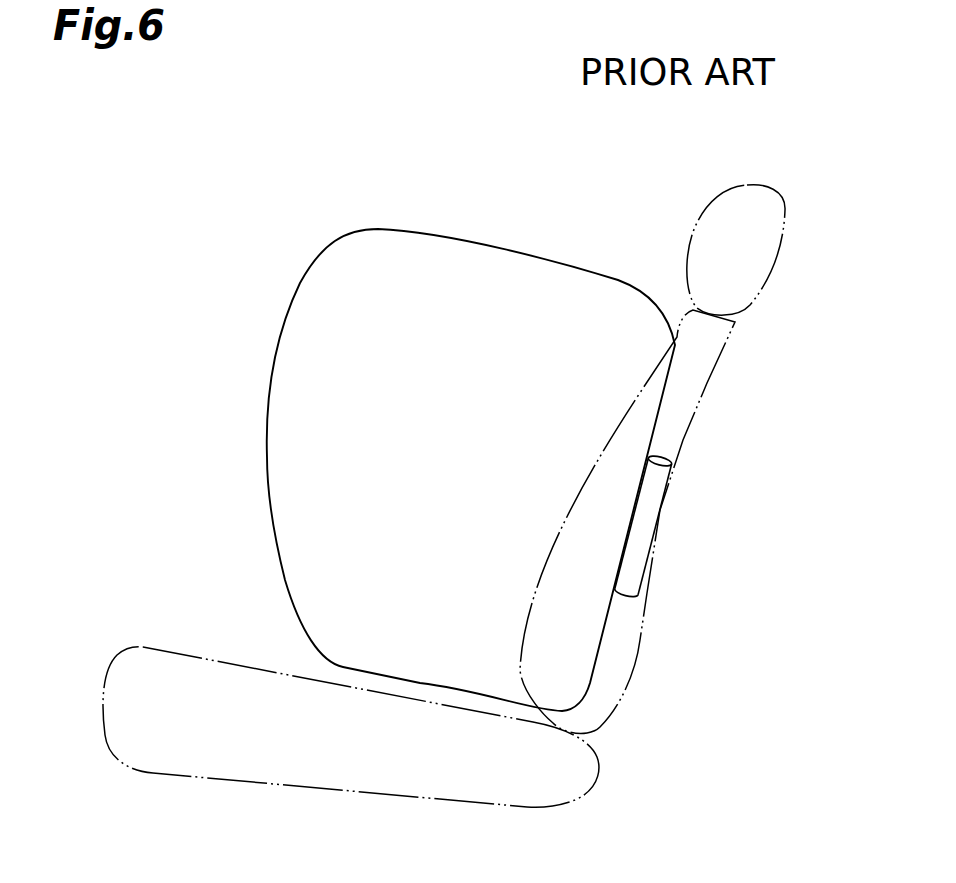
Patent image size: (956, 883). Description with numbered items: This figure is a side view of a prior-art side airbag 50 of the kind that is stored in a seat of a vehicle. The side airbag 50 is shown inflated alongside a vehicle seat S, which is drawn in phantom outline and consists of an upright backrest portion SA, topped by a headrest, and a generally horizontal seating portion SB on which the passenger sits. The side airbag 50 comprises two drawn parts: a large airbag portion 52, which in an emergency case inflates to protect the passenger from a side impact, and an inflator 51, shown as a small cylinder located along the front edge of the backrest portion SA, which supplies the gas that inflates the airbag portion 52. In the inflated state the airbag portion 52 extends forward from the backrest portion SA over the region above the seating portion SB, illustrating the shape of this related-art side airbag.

The side airbag 50 is at (338, 209).
The inflator 51 is at (641, 529).
The airbag portion 52 is at (437, 253).
The vehicle seat S is at (768, 713).
The backrest portion SA is at (632, 683).
The seating portion SB is at (598, 776).